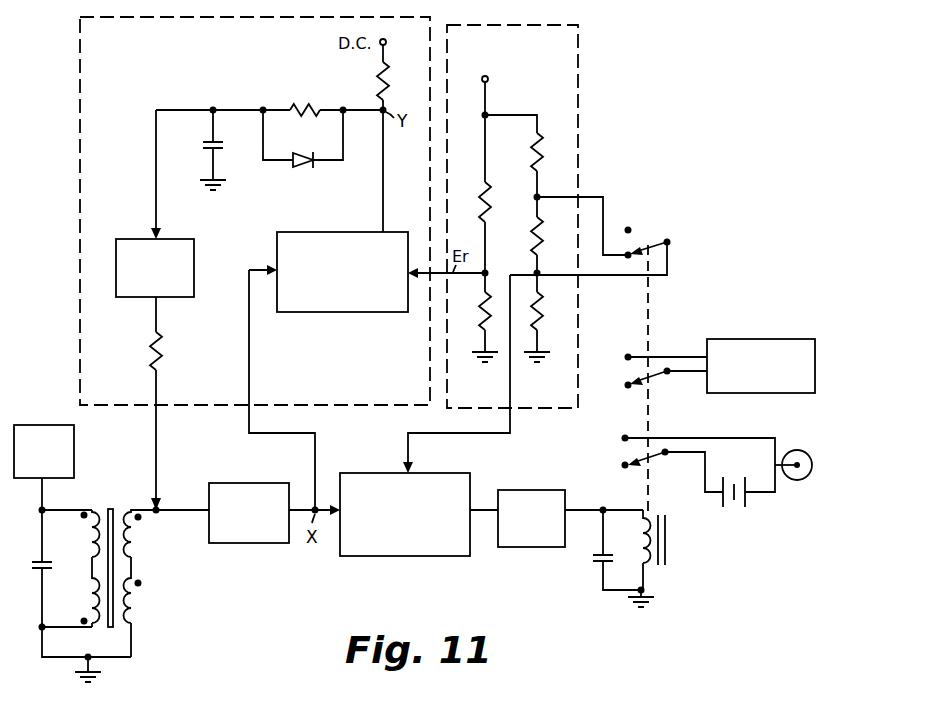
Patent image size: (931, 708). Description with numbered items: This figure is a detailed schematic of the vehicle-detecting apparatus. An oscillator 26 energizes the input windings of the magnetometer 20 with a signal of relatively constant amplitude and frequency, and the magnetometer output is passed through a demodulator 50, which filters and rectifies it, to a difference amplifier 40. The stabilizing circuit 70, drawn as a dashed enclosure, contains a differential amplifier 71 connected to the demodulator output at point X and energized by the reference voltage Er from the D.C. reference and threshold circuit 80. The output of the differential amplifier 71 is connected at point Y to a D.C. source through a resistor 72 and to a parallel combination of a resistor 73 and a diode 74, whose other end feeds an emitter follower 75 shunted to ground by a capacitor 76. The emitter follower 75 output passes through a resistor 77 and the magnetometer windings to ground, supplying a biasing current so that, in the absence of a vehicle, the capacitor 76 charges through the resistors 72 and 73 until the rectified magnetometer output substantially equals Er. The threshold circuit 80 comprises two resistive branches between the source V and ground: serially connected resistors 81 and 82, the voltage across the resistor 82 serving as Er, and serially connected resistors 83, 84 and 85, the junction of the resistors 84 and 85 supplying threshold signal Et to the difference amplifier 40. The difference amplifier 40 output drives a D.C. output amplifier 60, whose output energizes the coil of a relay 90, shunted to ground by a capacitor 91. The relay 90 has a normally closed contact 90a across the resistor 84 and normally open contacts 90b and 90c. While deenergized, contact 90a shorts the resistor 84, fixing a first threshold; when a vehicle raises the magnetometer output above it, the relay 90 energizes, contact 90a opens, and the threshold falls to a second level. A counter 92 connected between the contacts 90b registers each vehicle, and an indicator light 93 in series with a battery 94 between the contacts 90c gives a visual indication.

The stabilizing circuit 70 is at (392, 22).
The D.C. reference and threshold circuit 80 is at (545, 25).
The resistor 72 is at (390, 83).
The resistor 73 is at (298, 105).
The diode 74 is at (298, 156).
The capacitor 76 is at (208, 141).
The emitter follower 75 is at (170, 239).
The resistor 77 is at (164, 357).
The differential amplifier 71 is at (336, 312).
The resistor 81 is at (489, 197).
The resistor 82 is at (479, 314).
The resistor 83 is at (540, 137).
The resistor 84 is at (541, 236).
The resistor 85 is at (541, 304).
The normally closed contact 90a is at (662, 214).
The normally open contact 90b is at (646, 371).
The normally open contact 90c is at (677, 464).
The electronic counter 92 is at (777, 339).
The indicator light 93 is at (793, 450).
The battery 94 is at (748, 507).
The capacitor 91 is at (603, 555).
The relay 90 is at (681, 549).
The oscillator 26 is at (31, 425).
The magnetometer 20 is at (123, 483).
The demodulator 50 is at (256, 483).
The difference amplifier 40 is at (437, 473).
The D.C. output amplifier 60 is at (535, 490).